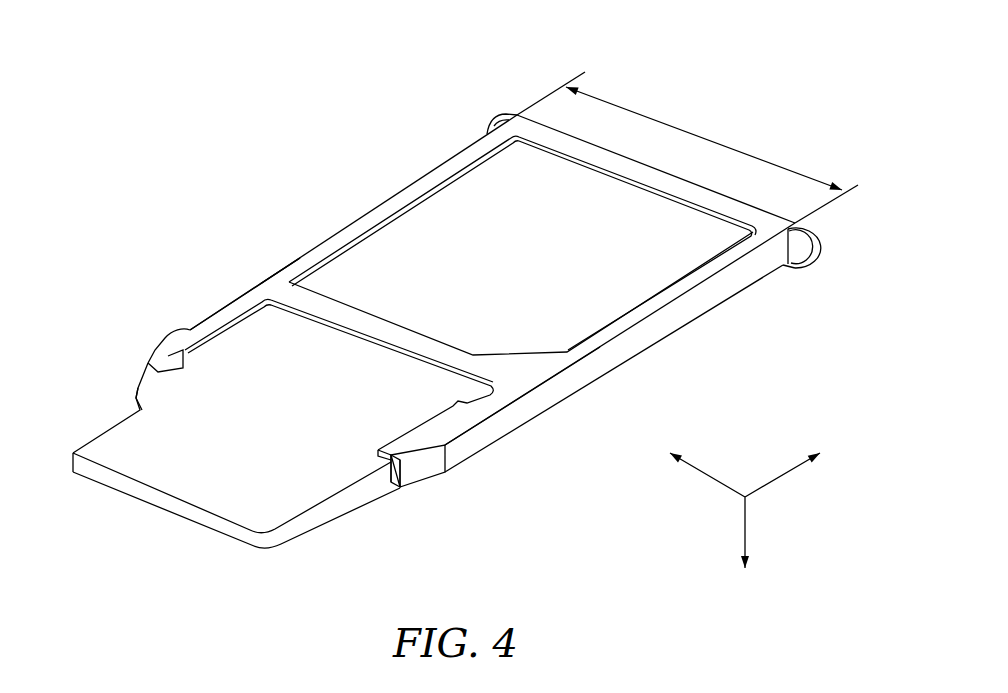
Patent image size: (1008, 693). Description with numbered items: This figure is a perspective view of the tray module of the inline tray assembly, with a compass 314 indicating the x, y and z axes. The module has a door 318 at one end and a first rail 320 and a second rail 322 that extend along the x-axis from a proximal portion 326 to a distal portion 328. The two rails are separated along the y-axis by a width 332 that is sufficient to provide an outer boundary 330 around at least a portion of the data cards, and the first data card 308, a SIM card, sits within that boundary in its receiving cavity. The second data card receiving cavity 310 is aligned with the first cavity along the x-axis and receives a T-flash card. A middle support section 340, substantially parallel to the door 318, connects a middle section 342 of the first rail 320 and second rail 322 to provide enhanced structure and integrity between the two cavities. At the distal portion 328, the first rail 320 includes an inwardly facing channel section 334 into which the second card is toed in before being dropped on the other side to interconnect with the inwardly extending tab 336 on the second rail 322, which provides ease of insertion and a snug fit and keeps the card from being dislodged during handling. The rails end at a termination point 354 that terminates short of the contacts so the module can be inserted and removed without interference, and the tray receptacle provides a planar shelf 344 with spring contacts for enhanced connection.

The first data card 308 is at (492, 262).
The second data card receiving cavity 310 is at (110, 410).
The compass 314 is at (748, 523).
The door 318 is at (800, 228).
The first rail 320 is at (620, 365).
The second rail 322 is at (371, 212).
The proximal portion 326 is at (743, 289).
The distal portion 328 is at (450, 463).
The outer boundary 330 is at (462, 166).
The width 332 is at (703, 137).
The channel section 334 is at (388, 478).
The tab 336 is at (176, 346).
The middle support section 340 is at (274, 281).
The middle section 342 is at (232, 309).
The shelf 344 is at (545, 402).
The termination point 354 is at (136, 391).